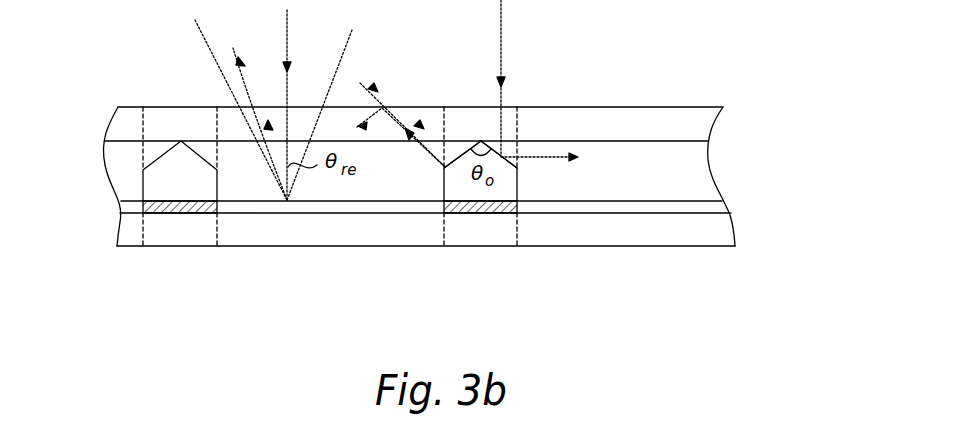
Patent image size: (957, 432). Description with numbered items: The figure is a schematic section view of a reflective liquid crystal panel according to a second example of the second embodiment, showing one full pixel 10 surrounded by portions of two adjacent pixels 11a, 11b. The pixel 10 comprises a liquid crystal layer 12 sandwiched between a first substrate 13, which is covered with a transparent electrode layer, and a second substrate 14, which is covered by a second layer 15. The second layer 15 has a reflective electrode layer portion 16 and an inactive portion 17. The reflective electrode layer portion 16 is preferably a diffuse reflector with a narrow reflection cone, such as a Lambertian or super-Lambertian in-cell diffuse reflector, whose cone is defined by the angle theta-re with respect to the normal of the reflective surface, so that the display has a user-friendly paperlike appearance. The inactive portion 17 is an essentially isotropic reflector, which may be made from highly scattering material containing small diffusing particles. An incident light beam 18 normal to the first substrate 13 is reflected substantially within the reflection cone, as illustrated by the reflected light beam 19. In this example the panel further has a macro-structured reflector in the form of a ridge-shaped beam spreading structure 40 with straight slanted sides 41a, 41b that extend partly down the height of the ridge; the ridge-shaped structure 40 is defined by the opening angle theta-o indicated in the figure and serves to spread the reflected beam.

The pixel 10 is at (517, 260).
The adjacent pixel 11a is at (148, 258).
The adjacent pixel 11b is at (607, 250).
The liquid crystal layer 12 is at (227, 158).
The first substrate 13 is at (232, 125).
The second substrate 14 is at (245, 233).
The second layer 15 is at (722, 207).
The reflective electrode layer portion 16 is at (290, 205).
The inactive portion 17 is at (460, 212).
The incident light beam 18 is at (287, 33).
The reflected light beam 19 is at (230, 48).
The ridge-shaped beam spreading structure 40 is at (515, 168).
The slanted side 41a is at (470, 153).
The slanted side 41b is at (497, 152).